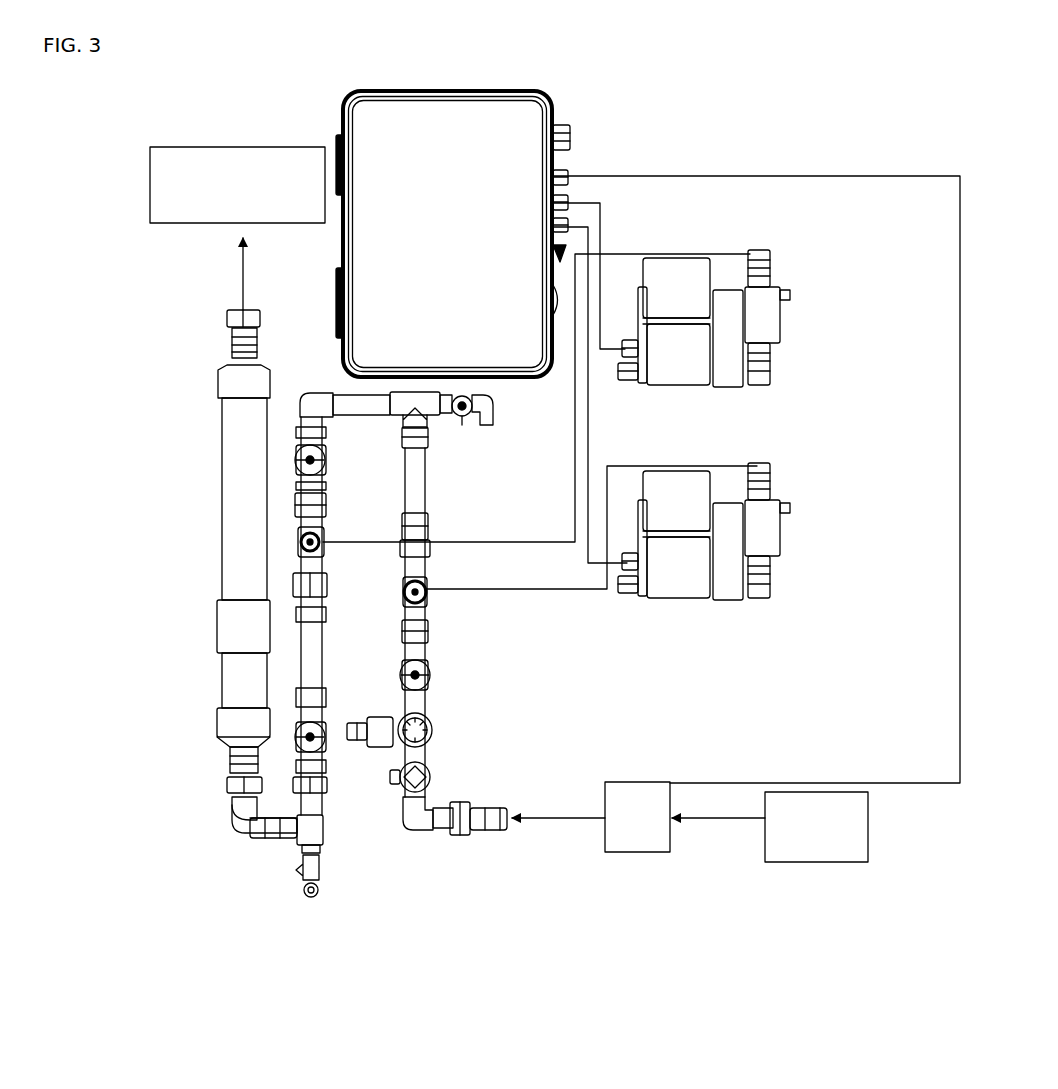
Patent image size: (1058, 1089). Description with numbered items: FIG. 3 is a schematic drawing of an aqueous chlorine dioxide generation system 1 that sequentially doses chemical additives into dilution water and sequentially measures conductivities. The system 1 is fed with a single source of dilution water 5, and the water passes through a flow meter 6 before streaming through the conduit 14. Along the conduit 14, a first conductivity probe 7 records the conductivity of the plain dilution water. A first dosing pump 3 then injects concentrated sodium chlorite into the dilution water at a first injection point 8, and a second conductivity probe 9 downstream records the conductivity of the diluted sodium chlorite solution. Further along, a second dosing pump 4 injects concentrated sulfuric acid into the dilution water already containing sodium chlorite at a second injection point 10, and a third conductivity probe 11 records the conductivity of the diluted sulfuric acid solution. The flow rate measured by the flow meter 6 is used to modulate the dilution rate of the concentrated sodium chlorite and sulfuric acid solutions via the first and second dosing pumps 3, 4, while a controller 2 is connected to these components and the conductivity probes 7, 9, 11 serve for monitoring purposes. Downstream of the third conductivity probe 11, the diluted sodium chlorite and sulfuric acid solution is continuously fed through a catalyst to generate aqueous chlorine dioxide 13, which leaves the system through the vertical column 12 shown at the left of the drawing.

The aqueous chlorine dioxide generation system 1 is at (531, 70).
The controller 2 is at (460, 172).
The first dosing pump 3 is at (785, 540).
The second dosing pump 4 is at (763, 318).
The source of dilution water 5 is at (816, 827).
The flow meter 6 is at (637, 817).
The first conductivity probe 7 is at (430, 690).
The first injection point 8 is at (427, 600).
The second conductivity probe 9 is at (330, 462).
The second injection point 10 is at (300, 540).
The third conductivity probe 11 is at (293, 735).
The column 12 is at (243, 455).
The aqueous chlorine dioxide 13 is at (237, 185).
The conduit 14 is at (300, 400).